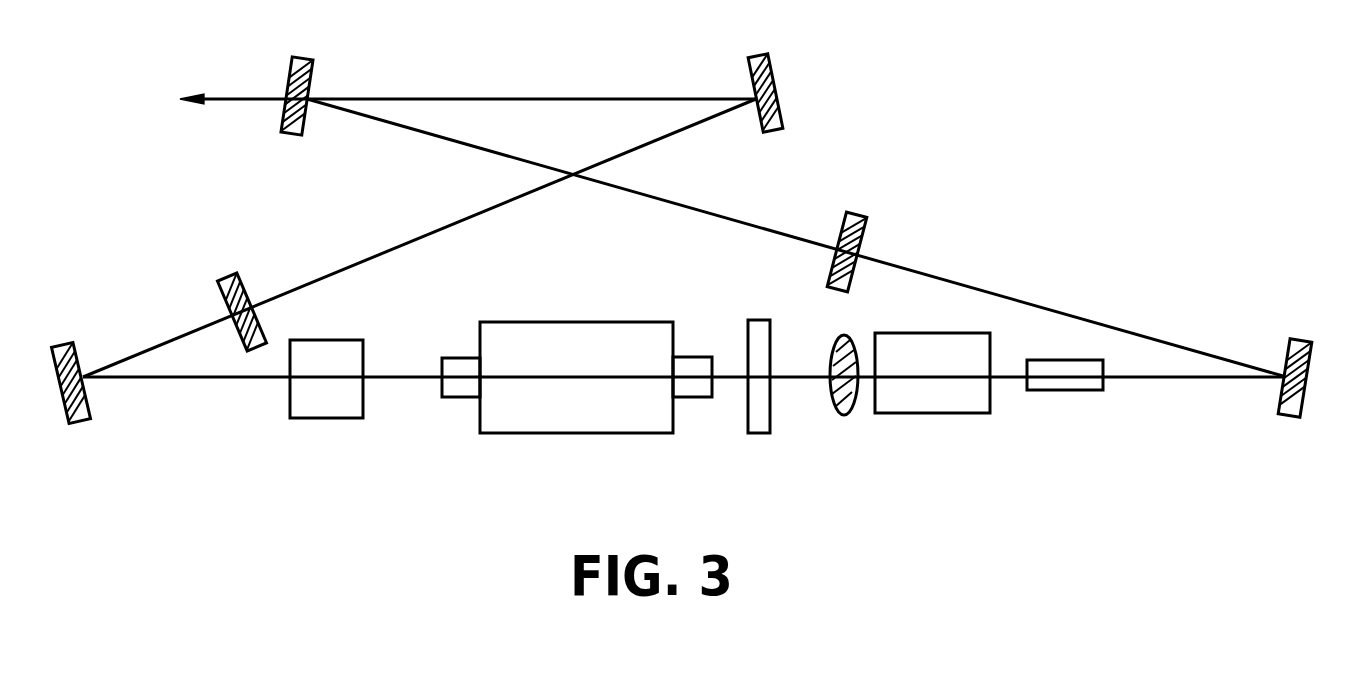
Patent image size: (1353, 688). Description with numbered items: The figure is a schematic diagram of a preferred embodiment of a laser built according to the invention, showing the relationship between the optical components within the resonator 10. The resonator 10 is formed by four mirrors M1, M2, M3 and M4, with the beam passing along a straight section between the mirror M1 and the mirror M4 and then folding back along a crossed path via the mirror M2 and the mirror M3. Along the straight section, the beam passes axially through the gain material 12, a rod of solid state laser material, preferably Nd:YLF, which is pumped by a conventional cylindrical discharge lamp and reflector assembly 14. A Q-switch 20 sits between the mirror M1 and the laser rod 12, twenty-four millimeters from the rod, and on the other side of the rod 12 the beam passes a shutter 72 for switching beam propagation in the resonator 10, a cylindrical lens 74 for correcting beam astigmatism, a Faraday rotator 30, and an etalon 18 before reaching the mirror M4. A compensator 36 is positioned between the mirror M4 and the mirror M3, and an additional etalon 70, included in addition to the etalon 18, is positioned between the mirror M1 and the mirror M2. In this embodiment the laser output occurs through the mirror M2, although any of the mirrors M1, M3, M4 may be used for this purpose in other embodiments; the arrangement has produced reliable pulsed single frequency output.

The resonator 10 is at (232, 206).
The gain material 12 is at (455, 397).
The discharge lamp and reflector assembly 14 is at (542, 433).
The etalon 18 is at (1100, 390).
The Q-switch 20 is at (330, 420).
The Faraday rotator 30 is at (968, 413).
The compensator 36 is at (865, 230).
The etalon 70 is at (248, 285).
The shutter 72 is at (753, 433).
The cylindrical lens 74 is at (840, 413).
The mirror M1 is at (78, 352).
The mirror M2 is at (775, 65).
The mirror M3 is at (315, 63).
The mirror M4 is at (1300, 340).